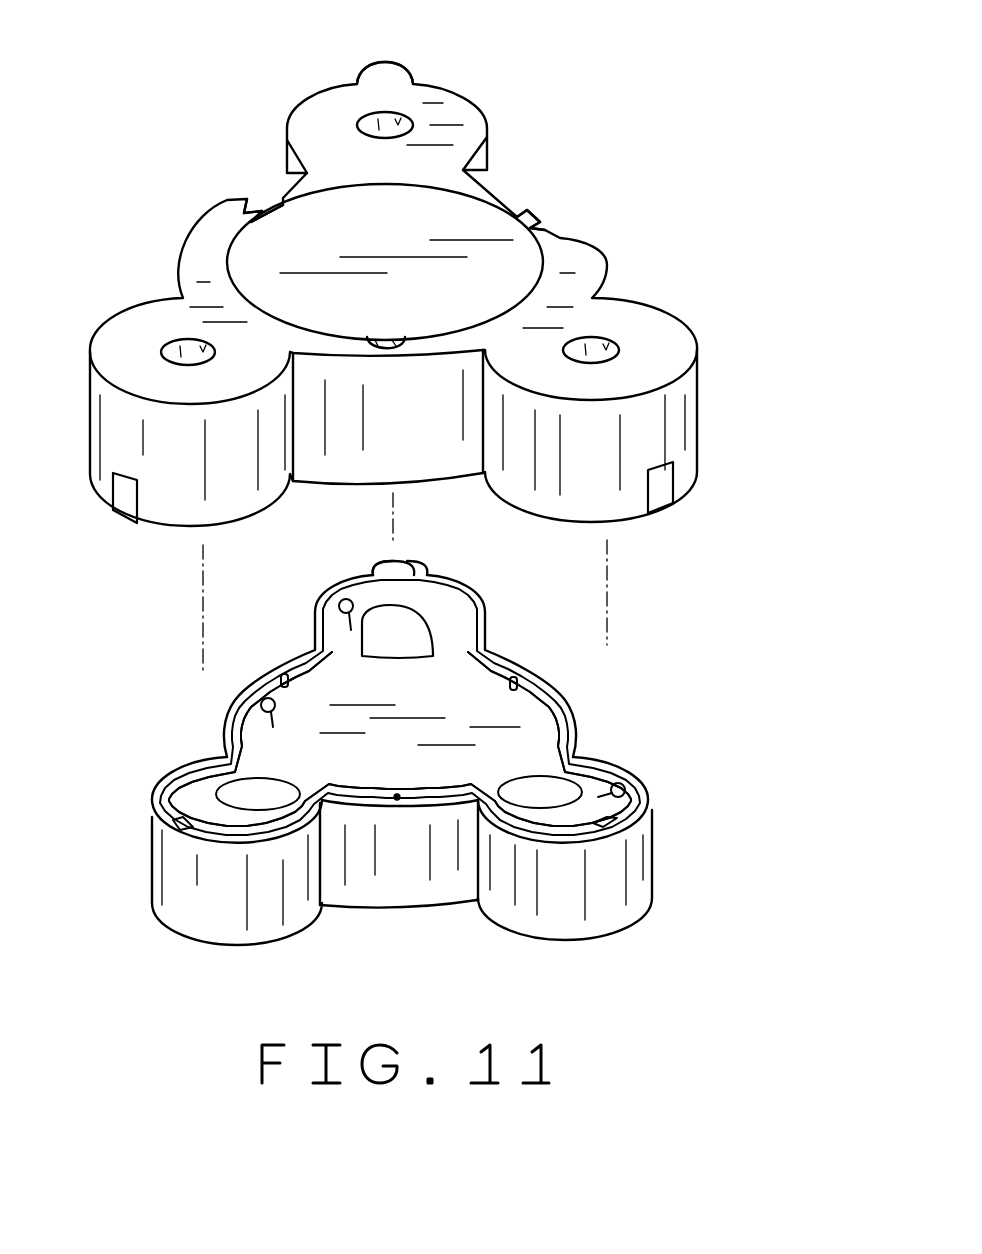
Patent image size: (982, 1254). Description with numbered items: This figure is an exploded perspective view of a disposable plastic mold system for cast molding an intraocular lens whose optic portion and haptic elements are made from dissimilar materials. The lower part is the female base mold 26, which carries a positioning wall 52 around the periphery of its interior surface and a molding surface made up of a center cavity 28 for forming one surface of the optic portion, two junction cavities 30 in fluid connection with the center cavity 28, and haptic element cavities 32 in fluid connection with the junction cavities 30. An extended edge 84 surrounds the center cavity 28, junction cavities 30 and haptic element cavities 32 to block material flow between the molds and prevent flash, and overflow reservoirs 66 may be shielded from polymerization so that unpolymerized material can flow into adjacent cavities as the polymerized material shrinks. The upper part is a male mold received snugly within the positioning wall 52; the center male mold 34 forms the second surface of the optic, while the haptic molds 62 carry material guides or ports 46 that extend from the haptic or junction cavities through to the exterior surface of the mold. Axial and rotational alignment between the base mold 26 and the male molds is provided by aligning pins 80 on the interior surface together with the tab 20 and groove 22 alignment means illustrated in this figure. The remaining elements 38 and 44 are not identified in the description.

The tab 20 is at (385, 57).
The groove 22 is at (127, 503).
The female base mold 26 is at (438, 768).
The center cavity 28 is at (380, 763).
The junction cavities 30 is at (480, 620).
The haptic element cavity 32 is at (243, 813).
The center male mold 34 is at (470, 220).
The notch 38 is at (230, 200).
The key 44 is at (277, 197).
The material guides or ports 46 is at (403, 120).
The positioning wall 52 is at (460, 592).
The haptic molds 62 is at (406, 364).
The overflow reservoirs 66 is at (350, 593).
The aligning pins 80 is at (280, 667).
The extended edge 84 is at (567, 767).